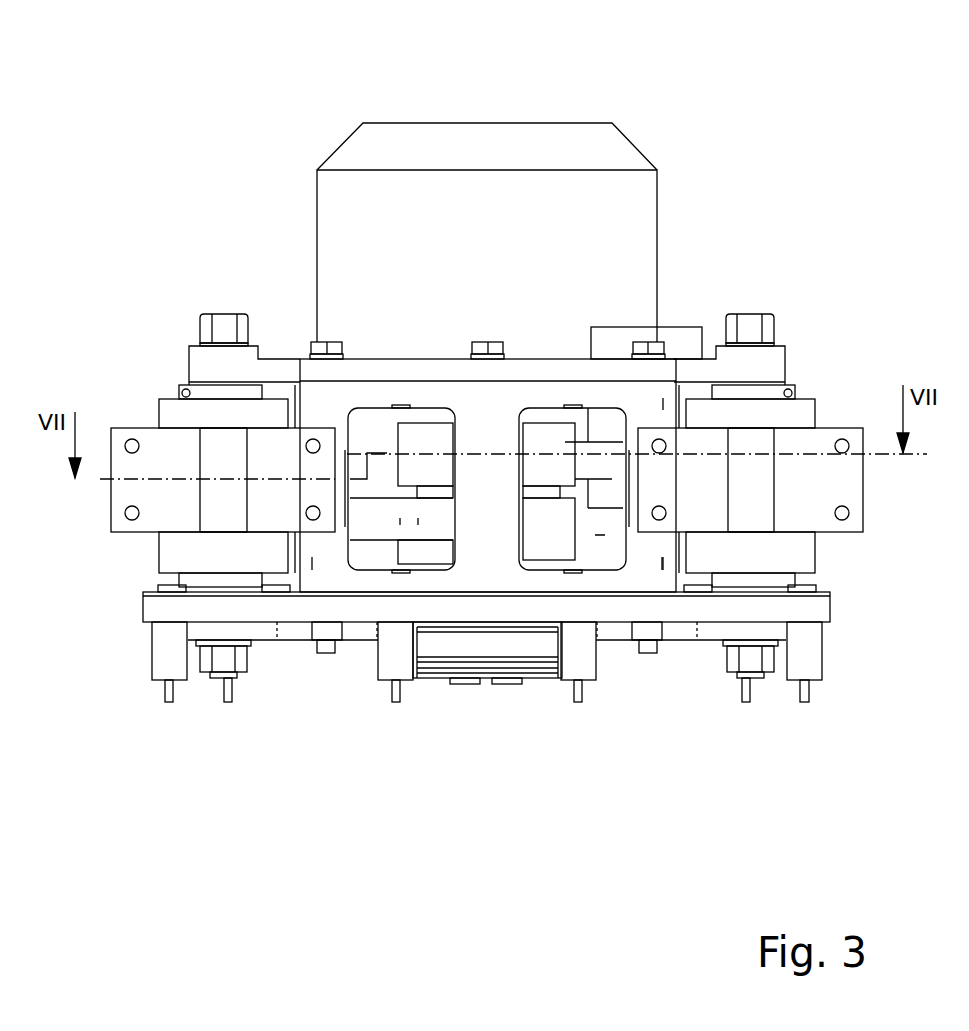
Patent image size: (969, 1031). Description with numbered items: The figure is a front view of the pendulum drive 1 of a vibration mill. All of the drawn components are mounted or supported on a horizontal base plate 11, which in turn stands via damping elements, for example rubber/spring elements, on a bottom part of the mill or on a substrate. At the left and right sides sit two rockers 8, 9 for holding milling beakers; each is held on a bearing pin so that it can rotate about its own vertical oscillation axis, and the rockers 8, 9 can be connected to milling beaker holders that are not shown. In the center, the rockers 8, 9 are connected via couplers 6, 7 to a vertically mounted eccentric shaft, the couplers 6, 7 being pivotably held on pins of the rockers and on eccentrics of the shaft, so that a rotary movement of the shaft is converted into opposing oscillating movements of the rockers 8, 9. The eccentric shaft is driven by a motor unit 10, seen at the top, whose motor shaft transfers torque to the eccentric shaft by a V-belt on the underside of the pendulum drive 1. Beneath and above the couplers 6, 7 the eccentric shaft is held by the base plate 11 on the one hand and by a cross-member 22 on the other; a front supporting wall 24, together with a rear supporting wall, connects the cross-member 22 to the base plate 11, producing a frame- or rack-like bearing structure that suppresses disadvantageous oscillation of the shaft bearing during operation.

The pendulum drive 1 is at (770, 102).
The coupler 6 is at (428, 530).
The coupler 7 is at (427, 440).
The rocker 8 is at (132, 490).
The rocker 9 is at (848, 488).
The motor unit 10 is at (548, 193).
The base plate 11 is at (155, 608).
The cross-member 22 is at (540, 368).
The front supporting wall 24 is at (492, 545).